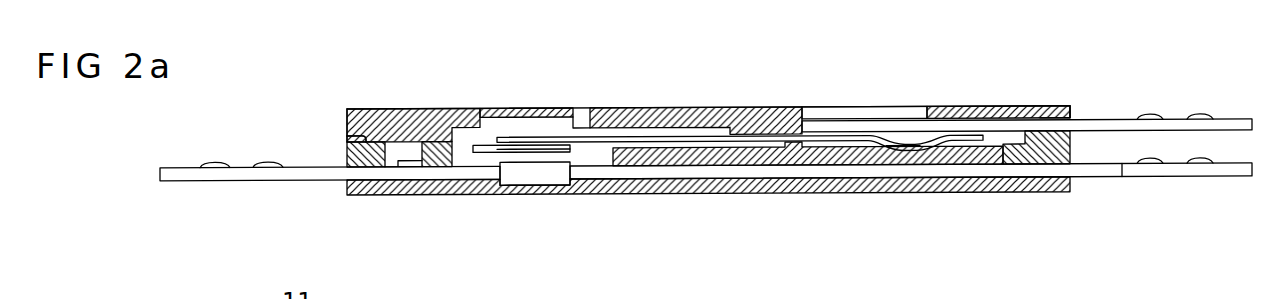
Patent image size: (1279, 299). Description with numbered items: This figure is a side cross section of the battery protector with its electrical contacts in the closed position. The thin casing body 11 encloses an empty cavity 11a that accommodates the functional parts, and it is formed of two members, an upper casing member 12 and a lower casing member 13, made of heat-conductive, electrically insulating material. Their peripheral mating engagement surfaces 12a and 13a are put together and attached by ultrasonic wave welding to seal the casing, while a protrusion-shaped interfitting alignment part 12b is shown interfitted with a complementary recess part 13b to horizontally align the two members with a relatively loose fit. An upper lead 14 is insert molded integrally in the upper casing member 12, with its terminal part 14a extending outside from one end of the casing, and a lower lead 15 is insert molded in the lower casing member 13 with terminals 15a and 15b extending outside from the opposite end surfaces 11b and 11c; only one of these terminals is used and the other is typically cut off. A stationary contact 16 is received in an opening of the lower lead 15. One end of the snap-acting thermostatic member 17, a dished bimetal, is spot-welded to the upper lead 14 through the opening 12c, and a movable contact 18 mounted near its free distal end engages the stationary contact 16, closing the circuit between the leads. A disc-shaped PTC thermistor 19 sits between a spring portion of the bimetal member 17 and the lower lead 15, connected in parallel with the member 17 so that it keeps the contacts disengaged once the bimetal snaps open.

The casing body 11 is at (426, 106).
The empty cavity 11a is at (578, 122).
The end surface 11b is at (1072, 116).
The end surface 11c is at (347, 126).
The upper casing member 12 is at (714, 122).
The mating engagement surface 12a is at (368, 143).
The interfitting alignment part 12b is at (396, 153).
The opening 12c is at (913, 114).
The lower casing member 13 is at (690, 192).
The mating engagement surface 13a is at (353, 139).
The interfitting alignment part 13b is at (419, 165).
The upper lead 14 is at (842, 124).
The terminal part 14a is at (1176, 118).
The lower lead 15 is at (603, 172).
The terminal 15a is at (1177, 172).
The terminal 15b is at (240, 172).
The stationary contact 16 is at (532, 172).
The snap-acting thermostatic member 17 is at (640, 137).
The movable contact 18 is at (500, 148).
The PTC thermistor 19 is at (909, 152).